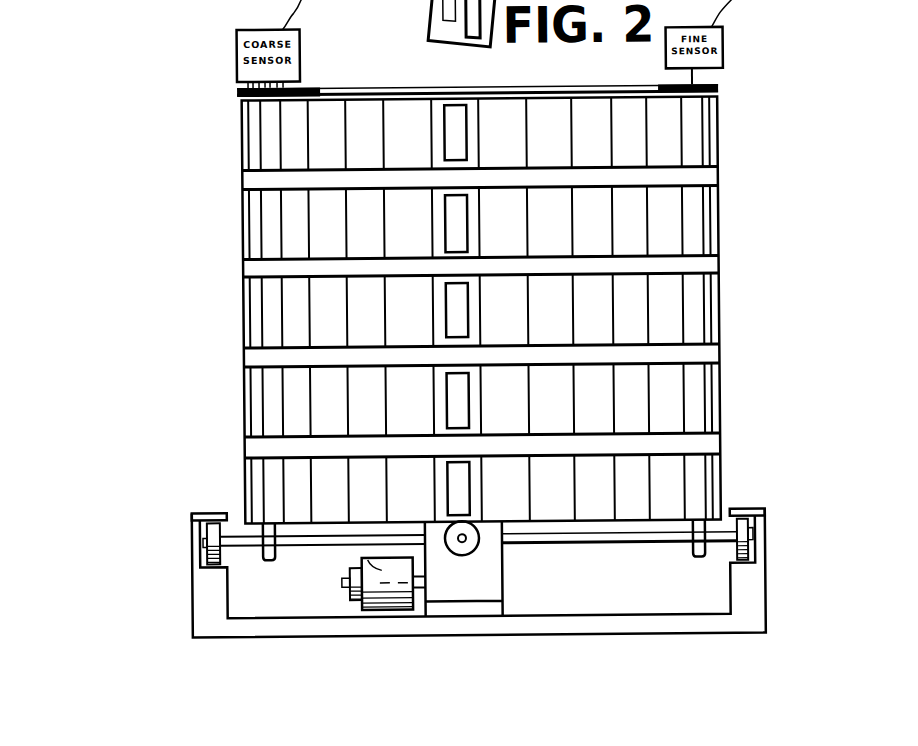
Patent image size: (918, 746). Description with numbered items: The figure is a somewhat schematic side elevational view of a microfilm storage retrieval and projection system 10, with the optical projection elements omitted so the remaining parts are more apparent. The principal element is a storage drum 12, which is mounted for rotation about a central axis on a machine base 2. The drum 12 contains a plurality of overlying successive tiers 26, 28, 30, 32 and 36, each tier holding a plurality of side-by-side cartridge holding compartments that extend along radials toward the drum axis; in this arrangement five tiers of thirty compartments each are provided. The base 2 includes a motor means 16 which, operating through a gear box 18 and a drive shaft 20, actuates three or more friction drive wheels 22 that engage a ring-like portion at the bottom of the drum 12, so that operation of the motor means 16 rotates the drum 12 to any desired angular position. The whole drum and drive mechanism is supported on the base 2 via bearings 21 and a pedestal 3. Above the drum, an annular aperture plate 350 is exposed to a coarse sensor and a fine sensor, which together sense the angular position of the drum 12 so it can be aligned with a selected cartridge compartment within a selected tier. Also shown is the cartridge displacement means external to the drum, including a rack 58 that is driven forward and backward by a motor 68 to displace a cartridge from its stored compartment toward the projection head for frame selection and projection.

The microfilm storage retrieval and projection system 10 is at (126, 247).
The storage drum 12 is at (244, 136).
The tier 36 is at (244, 158).
The tier 32 is at (244, 220).
The tier 30 is at (244, 321).
The tier 28 is at (244, 403).
The tier 26 is at (244, 478).
The annular aperture plate 350 is at (720, 87).
The rack 58 is at (454, 12).
The motor 68 is at (470, 25).
The base 2 is at (763, 553).
The pedestal 3 is at (500, 608).
The bearings 21 is at (197, 528).
The drive shaft 20 is at (591, 543).
The friction drive wheels 22 is at (273, 558).
The gear box 18 is at (485, 567).
The motor means 16 is at (378, 569).